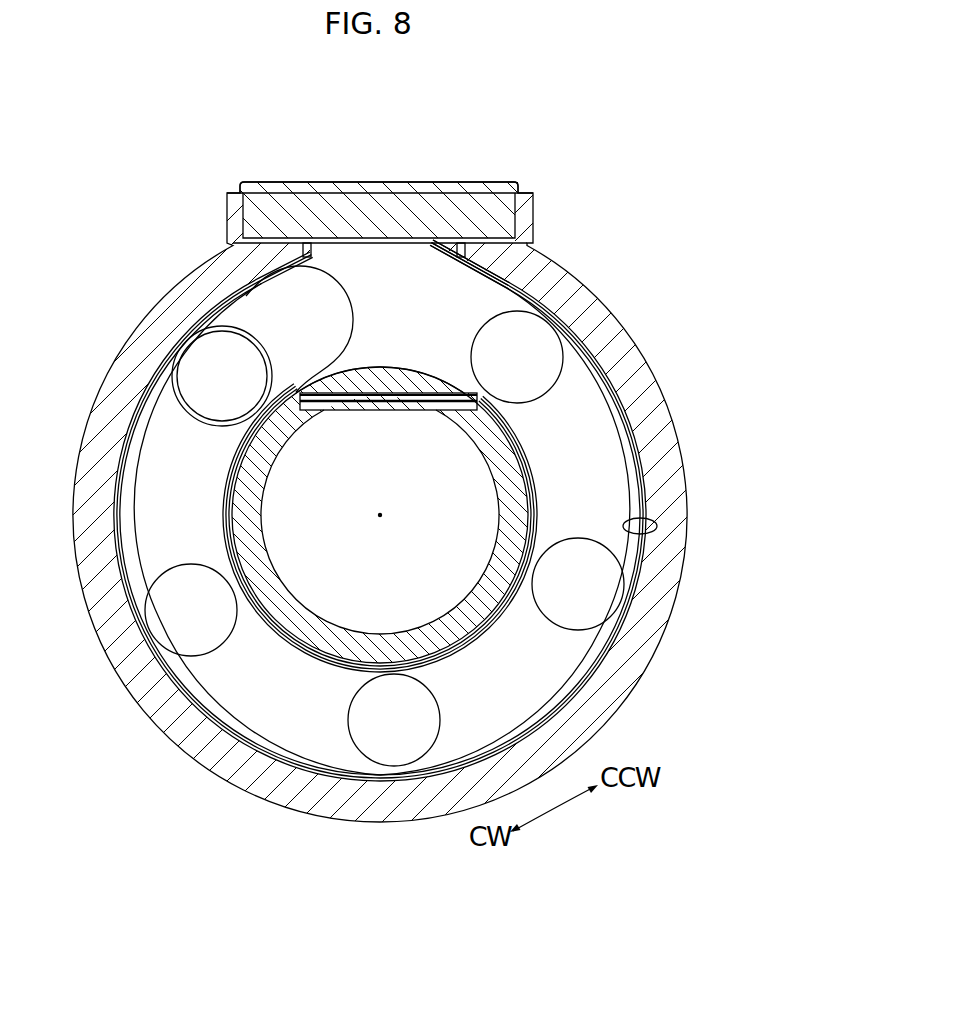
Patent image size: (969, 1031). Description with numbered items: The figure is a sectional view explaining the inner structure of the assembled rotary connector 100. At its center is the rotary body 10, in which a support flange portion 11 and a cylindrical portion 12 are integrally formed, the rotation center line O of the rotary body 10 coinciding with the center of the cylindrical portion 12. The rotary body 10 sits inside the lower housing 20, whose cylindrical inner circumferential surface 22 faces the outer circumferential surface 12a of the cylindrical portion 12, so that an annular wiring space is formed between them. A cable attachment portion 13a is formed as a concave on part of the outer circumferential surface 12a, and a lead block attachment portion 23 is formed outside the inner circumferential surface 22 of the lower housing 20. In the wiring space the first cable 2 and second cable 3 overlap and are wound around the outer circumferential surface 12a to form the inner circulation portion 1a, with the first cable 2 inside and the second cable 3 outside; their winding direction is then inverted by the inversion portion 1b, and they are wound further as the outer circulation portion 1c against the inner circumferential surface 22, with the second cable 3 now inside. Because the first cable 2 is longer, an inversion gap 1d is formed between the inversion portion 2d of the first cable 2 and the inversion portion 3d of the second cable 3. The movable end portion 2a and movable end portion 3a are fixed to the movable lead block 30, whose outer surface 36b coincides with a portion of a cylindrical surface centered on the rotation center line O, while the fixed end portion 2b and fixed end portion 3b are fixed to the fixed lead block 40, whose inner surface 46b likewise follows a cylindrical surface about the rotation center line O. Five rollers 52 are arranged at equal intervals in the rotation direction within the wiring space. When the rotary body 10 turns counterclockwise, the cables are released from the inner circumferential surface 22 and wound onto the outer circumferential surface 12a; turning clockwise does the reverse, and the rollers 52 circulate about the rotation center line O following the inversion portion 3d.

The rotary connector 100 is at (622, 296).
The rotary body 10 is at (399, 502).
The lower housing 20 is at (664, 660).
The inner circumferential surface 22 is at (657, 527).
The lead block attachment portion 23 is at (405, 183).
The fixed lead block 40 is at (327, 196).
The inner surface 46b is at (408, 246).
The inner circulation portion 1a is at (303, 668).
The inversion portion 1b is at (224, 316).
The outer circulation portion 1c is at (222, 712).
The inversion gap 1d is at (252, 297).
The first cable 2 is at (393, 515).
The movable end portion 2a is at (400, 398).
The fixed end portion 2b is at (436, 244).
The inversion portion 2d is at (345, 284).
The second cable 3 is at (230, 457).
The movable end portion 3a is at (435, 392).
The fixed end portion 3b is at (417, 267).
The inversion portion 3d is at (266, 348).
The movable lead block 30 is at (390, 462).
The outer surface 36b is at (360, 380).
The cable attachment portion 13a is at (336, 398).
The cylindrical portion 12 is at (296, 615).
The outer circumferential surface 12a is at (531, 487).
The support flange portion 11 is at (557, 688).
The roller 52 is at (188, 383).
The rotation center line O is at (383, 522).